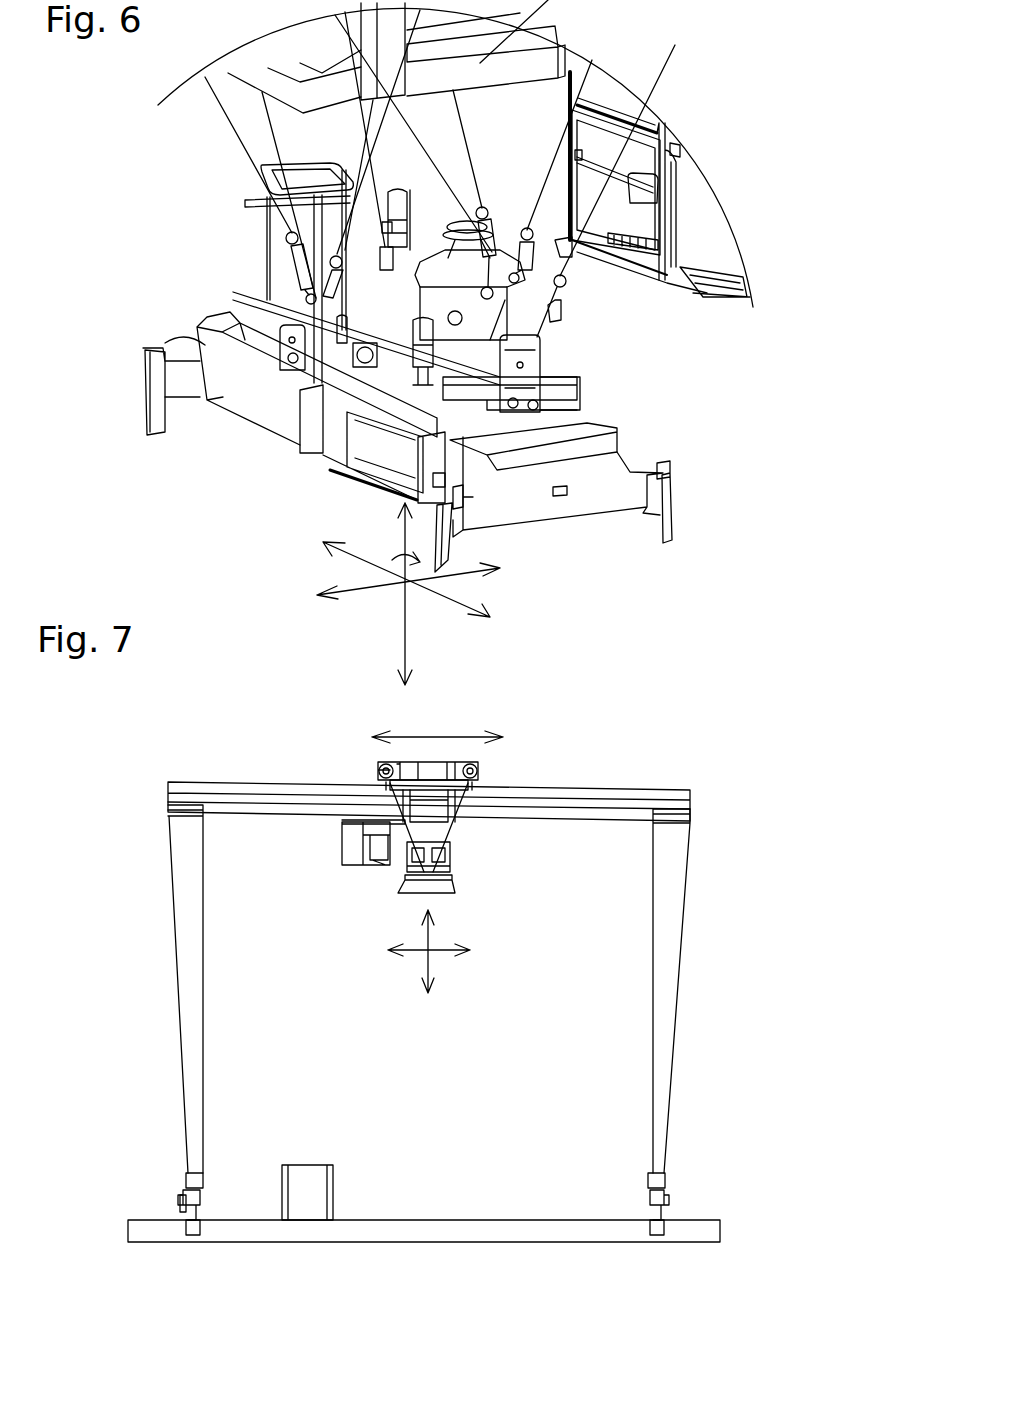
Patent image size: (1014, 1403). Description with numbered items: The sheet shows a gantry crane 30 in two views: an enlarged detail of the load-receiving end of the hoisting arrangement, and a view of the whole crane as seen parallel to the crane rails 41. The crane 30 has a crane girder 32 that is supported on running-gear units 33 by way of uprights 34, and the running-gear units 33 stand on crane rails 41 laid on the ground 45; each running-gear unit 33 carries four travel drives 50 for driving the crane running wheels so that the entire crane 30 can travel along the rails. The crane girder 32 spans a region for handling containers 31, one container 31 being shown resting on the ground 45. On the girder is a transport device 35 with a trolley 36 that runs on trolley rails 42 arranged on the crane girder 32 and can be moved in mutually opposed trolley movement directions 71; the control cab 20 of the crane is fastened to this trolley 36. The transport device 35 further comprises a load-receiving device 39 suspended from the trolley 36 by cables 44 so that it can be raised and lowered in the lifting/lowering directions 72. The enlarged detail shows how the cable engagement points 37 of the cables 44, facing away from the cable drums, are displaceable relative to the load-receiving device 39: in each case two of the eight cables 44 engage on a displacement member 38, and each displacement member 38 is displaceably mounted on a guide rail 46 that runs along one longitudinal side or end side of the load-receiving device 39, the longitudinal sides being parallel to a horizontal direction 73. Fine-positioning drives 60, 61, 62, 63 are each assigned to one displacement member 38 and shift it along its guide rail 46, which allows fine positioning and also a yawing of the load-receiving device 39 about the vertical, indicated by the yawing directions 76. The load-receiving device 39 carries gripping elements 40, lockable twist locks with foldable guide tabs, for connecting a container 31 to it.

In FIG. 6, the control cab 20 is at (730, 172).
In FIG. 7, the control cab 20 is at (352, 845).
In FIG. 7, the crane 30 is at (174, 757).
In FIG. 7, the container 31 is at (302, 1190).
In FIG. 7, the crane girder 32 is at (480, 767).
In FIG. 7, the running-gear units 33 is at (190, 1187).
In FIG. 7, the uprights 34 is at (187, 945).
In FIG. 7, the transport device 35 is at (426, 788).
In FIG. 7, the trolley 36 is at (413, 860).
In FIG. 6, the cable engagement points 37 is at (300, 283).
In FIG. 6, the displacement member 38 is at (517, 290).
In FIG. 6, the load-receiving device 39 is at (657, 495).
In FIG. 7, the load-receiving device 39 is at (432, 885).
In FIG. 6, the gripping elements 40 is at (137, 420).
In FIG. 7, the crane rails 41 is at (195, 1220).
In FIG. 7, the trolley rails 42 is at (603, 795).
In FIG. 6, the cables 44 is at (352, 150).
In FIG. 7, the ground 45 is at (398, 1230).
In FIG. 6, the guide rail 46 is at (290, 347).
In FIG. 7, the travel drives 50 is at (182, 1205).
In FIG. 6, the fine-positioning drive 60 is at (347, 347).
In FIG. 6, the fine-positioning drive 61 is at (552, 356).
In FIG. 6, the fine-positioning drive 62 is at (390, 217).
In FIG. 6, the fine-positioning drive 63 is at (540, 316).
In FIG. 7, the trolley movement directions 71 is at (462, 735).
In FIG. 6, the lifting/lowering directions 72 is at (408, 640).
In FIG. 7, the lifting/lowering directions 72 is at (433, 965).
In FIG. 6, the horizontal direction 73 is at (364, 588).
In FIG. 7, the horizontal direction 73 is at (418, 958).
In FIG. 6, the yawing directions 76 is at (465, 556).